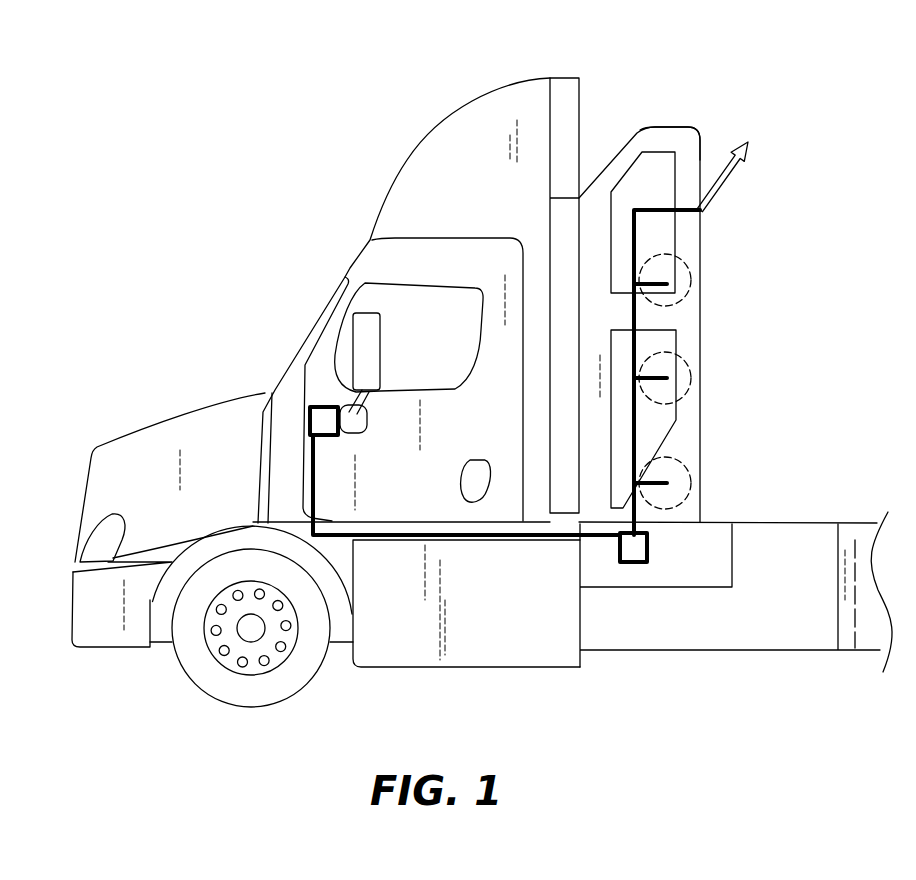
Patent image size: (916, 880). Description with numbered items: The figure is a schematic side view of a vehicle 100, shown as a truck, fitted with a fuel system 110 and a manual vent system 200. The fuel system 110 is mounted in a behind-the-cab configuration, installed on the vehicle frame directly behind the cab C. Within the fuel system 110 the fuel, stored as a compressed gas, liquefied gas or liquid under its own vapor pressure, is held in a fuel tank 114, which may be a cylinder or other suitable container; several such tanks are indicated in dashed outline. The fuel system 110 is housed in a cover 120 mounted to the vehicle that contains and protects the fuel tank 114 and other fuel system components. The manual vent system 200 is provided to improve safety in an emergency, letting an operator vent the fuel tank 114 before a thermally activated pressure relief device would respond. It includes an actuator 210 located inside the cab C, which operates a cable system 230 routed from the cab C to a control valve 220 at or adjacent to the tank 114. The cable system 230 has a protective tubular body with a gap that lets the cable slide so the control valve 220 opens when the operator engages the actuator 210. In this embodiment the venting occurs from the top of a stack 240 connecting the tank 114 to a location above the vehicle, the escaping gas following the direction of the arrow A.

The vehicle 100 is at (207, 100).
The fuel system 110 is at (719, 288).
The fuel tank 114 is at (690, 473).
The cover 120 is at (680, 140).
The manual vent system 200 is at (513, 558).
The actuator 210 is at (310, 425).
The control valve 220 is at (648, 547).
The cable system 230 is at (365, 545).
The stack 240 is at (666, 210).
The arrow A is at (735, 178).
The cab C is at (350, 364).